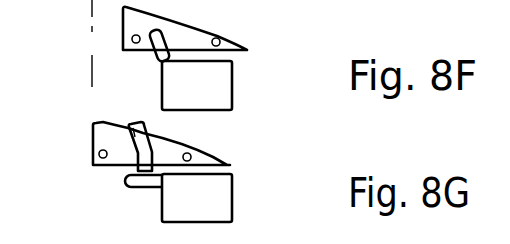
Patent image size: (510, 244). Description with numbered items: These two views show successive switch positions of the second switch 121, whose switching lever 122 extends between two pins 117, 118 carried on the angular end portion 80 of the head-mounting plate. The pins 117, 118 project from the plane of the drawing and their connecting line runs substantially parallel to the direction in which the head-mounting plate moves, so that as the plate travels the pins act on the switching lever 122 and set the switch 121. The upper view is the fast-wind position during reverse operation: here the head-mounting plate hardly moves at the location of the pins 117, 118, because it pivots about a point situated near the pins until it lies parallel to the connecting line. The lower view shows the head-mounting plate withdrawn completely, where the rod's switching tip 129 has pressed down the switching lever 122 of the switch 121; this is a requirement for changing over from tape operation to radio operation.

In FIG. 8F, the angular end portion 80 is at (203, 33).
In FIG. 8G, the angular end portion 80 is at (192, 158).
In FIG. 8F, the pin 117 is at (131, 39).
In FIG. 8G, the pin 117 is at (99, 155).
In FIG. 8F, the pin 118 is at (244, 43).
In FIG. 8G, the pin 118 is at (217, 162).
In FIG. 8F, the second switch 121 is at (220, 90).
In FIG. 8G, the second switch 121 is at (218, 200).
In FIG. 8F, the switching lever 122 is at (157, 56).
In FIG. 8G, the switching lever 122 is at (147, 183).
In FIG. 8G, the switching tip 129 is at (137, 123).